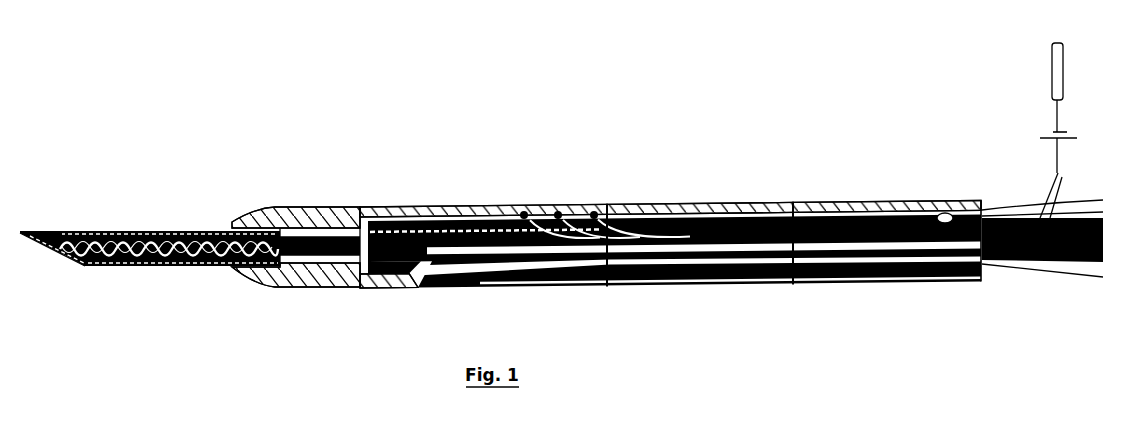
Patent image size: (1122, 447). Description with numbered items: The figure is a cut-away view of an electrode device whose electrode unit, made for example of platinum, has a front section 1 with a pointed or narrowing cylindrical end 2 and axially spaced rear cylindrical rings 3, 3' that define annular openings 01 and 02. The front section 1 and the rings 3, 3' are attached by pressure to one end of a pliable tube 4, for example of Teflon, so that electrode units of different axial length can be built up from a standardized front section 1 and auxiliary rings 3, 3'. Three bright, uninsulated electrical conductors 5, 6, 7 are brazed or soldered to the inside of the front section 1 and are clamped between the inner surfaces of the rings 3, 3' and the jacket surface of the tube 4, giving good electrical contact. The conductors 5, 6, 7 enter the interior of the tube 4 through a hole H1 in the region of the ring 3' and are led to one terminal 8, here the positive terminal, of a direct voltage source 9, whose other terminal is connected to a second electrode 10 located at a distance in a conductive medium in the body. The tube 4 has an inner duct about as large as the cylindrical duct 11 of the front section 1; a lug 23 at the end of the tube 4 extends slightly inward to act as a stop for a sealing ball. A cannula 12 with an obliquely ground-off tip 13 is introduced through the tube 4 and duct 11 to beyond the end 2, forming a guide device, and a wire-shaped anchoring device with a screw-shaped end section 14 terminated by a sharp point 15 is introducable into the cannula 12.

The front section 1 is at (423, 210).
The pointed end 2 is at (260, 220).
The rear cylindrical ring 3 is at (700, 178).
The rear cylindrical ring 3' is at (887, 213).
The tube 4 is at (485, 232).
The electrical conductor 5 is at (535, 224).
The electrical conductor 6 is at (574, 224).
The electrical conductor 7 is at (615, 222).
The terminal 8 is at (1058, 172).
The direct voltage source 9 is at (1046, 137).
The second electrode 10 is at (1055, 73).
The cylindrical duct 11 is at (320, 228).
The cannula 12 is at (183, 230).
The tip 13 is at (50, 233).
The screw-shaped end section 14 is at (155, 268).
The sharp point 15 is at (83, 267).
The lug 23 is at (362, 270).
The annular opening 01 is at (607, 284).
The annular opening 02 is at (793, 212).
The hole H1 is at (942, 215).